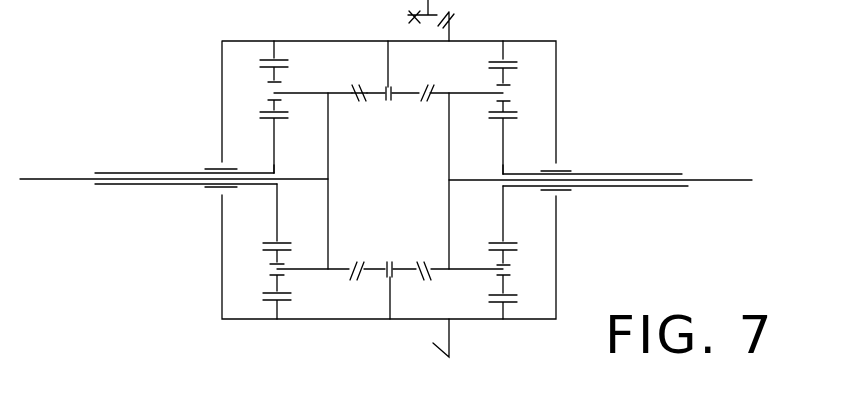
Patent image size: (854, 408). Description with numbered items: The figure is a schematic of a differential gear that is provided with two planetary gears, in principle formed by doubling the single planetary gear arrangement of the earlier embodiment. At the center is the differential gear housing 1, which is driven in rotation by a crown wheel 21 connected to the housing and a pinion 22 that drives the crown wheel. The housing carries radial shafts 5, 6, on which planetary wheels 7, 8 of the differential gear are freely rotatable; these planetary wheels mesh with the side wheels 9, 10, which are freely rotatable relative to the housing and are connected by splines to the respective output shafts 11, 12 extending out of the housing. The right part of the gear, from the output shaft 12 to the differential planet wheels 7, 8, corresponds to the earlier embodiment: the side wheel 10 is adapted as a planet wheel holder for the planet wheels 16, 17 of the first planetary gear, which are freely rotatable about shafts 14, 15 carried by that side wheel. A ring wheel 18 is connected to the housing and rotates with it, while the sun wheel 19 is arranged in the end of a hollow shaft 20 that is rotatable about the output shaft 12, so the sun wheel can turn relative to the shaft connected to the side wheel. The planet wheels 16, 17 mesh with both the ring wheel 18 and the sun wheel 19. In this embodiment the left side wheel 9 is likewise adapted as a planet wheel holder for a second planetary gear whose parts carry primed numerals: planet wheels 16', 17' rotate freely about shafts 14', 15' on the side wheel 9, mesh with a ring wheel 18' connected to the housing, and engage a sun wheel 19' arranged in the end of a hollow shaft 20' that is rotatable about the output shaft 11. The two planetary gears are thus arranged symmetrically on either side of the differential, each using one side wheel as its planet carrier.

The housing 1 is at (330, 41).
The radial shaft 5 is at (391, 60).
The radial shaft 6 is at (390, 300).
The planetary wheel 7 is at (367, 94).
The planetary wheel 8 is at (381, 263).
The side wheel 9 is at (329, 162).
The side wheel 10 is at (447, 168).
The output shaft 11 is at (54, 178).
The output shaft 12 is at (718, 180).
The shaft 14 is at (447, 78).
The shaft 14' is at (329, 78).
The shaft 15 is at (474, 227).
The shaft 15' is at (324, 232).
The planet wheel 16 is at (521, 115).
The planet wheel 16' is at (257, 130).
The planet wheel 17 is at (519, 295).
The planet wheel 17' is at (259, 294).
The ring wheel 18 is at (520, 46).
The ring wheel 18' is at (260, 45).
The sun wheel 19 is at (482, 159).
The sun wheel 19' is at (295, 158).
The hollow shaft 20 is at (595, 197).
The hollow shaft 20' is at (186, 195).
The crown wheel 21 is at (450, 22).
The pinion 22 is at (408, 17).